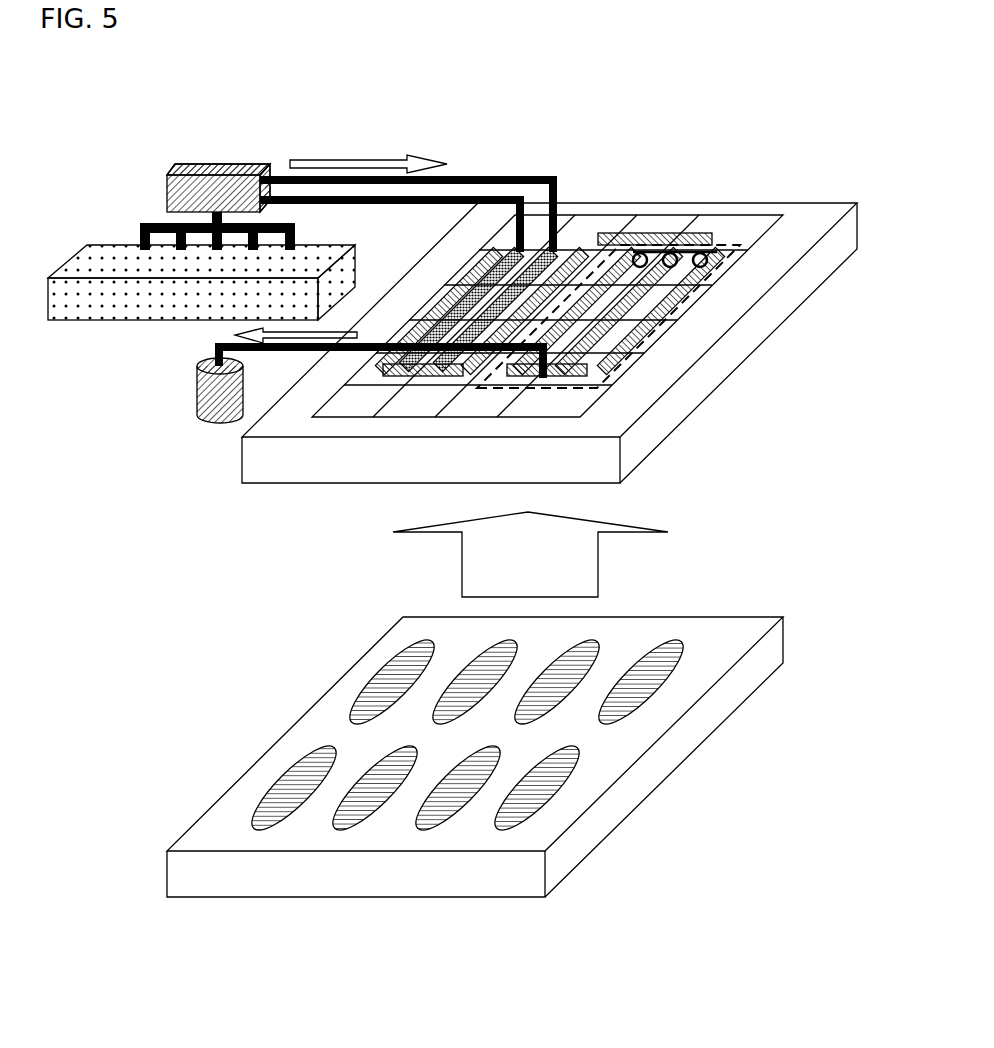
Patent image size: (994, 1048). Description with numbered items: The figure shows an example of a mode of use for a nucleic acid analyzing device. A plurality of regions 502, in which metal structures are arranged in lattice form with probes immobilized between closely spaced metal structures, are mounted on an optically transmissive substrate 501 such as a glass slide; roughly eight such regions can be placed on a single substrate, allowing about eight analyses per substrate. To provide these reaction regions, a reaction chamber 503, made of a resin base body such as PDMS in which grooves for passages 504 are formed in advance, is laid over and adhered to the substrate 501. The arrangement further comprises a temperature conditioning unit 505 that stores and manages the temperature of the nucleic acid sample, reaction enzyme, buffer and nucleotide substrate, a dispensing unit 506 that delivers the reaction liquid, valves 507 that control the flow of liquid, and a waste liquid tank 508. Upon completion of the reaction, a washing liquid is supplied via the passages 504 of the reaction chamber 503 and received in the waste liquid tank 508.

The substrate 501 is at (642, 773).
The regions 502 is at (663, 673).
The reaction chamber 503 is at (703, 377).
The passages 504 is at (663, 300).
The temperature conditioning unit 505 is at (103, 305).
The dispensing unit 506 is at (228, 167).
The valves 507 is at (727, 228).
The waste liquid tank 508 is at (208, 400).